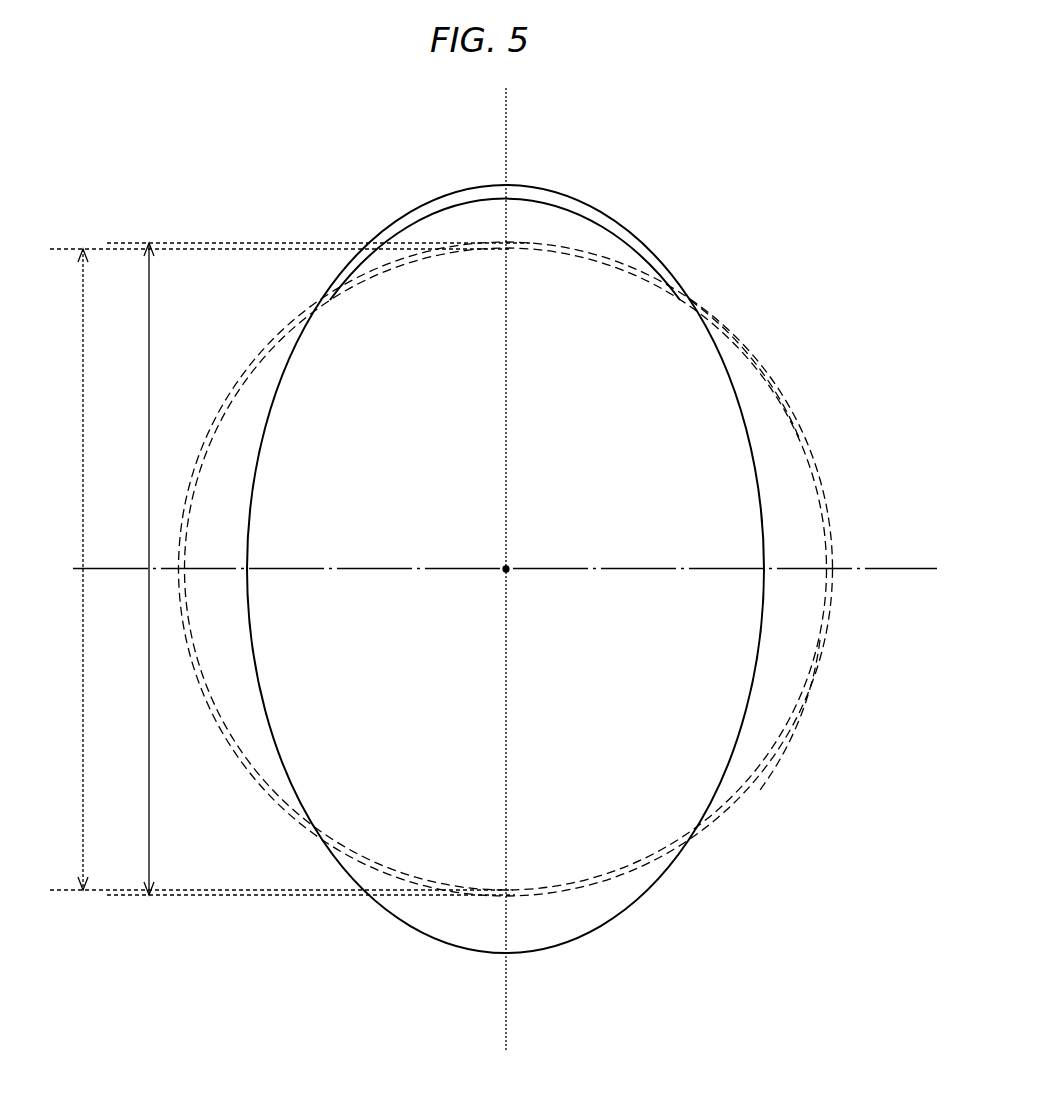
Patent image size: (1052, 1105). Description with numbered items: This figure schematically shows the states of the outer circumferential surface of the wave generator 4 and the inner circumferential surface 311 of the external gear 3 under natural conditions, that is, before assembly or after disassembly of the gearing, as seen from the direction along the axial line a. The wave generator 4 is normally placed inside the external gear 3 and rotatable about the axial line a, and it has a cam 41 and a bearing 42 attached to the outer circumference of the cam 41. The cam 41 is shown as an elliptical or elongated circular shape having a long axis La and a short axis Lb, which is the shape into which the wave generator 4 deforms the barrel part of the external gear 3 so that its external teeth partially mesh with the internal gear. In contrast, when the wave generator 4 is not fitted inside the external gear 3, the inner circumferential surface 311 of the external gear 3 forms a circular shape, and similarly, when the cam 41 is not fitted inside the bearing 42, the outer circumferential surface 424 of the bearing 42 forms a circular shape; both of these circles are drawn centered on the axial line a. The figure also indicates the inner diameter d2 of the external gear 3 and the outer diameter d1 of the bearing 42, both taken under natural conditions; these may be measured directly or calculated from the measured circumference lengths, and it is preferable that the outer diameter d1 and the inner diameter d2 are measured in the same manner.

The external gear 3 is at (775, 384).
The inner circumferential surface 311 is at (745, 340).
The wave generator 4 is at (433, 197).
The cam 41 is at (607, 213).
The bearing 42 is at (772, 755).
The outer circumferential surface 424 is at (812, 683).
The axial line a is at (510, 573).
The long axis La is at (507, 134).
The short axis Lb is at (898, 567).
The outer diameter d1 is at (281, 569).
The inner diameter d2 is at (318, 569).